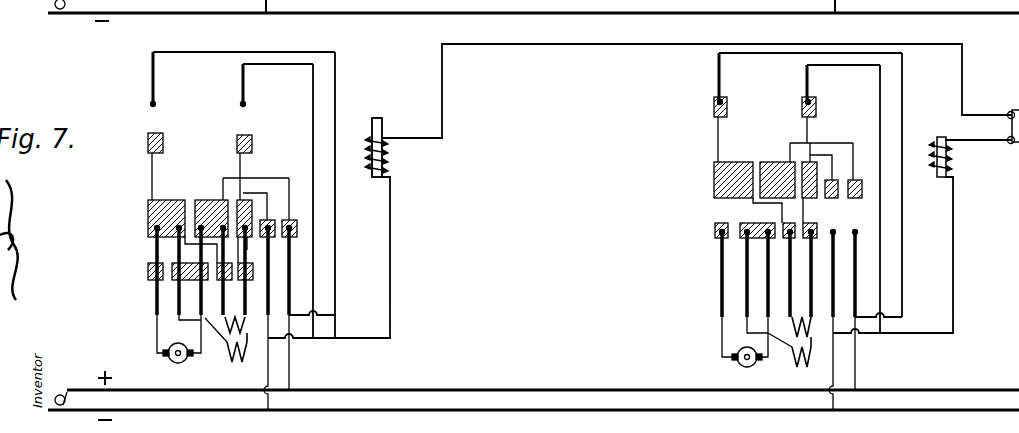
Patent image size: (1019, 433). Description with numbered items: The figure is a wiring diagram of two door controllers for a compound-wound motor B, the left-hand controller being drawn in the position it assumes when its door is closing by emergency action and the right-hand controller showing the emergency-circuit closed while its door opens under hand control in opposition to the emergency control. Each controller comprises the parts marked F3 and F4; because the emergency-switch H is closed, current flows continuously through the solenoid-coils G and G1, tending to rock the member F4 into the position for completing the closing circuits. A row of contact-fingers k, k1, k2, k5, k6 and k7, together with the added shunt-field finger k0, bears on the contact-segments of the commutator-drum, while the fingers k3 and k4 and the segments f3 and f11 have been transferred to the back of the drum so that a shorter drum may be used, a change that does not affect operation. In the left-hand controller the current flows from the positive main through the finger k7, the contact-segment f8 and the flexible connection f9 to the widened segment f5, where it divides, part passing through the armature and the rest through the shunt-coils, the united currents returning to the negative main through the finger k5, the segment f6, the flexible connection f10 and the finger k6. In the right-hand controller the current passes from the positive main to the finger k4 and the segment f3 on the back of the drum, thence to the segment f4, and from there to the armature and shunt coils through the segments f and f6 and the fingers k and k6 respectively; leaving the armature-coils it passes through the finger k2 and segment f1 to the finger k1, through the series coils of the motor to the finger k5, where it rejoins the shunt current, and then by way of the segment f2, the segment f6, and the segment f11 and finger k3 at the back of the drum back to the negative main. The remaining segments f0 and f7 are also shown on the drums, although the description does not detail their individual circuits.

The controller frame section F3 is at (493, 145).
The rocking member of the controller F4 is at (610, 195).
The contact-finger k is at (157, 308).
The contact-finger k1 is at (180, 303).
The contact-finger k2 is at (190, 254).
The contact-finger k3 is at (243, 84).
The contact-finger k4 is at (153, 80).
The contact-finger k5 is at (247, 250).
The contact-finger k6 is at (268, 258).
The contact-finger k7 is at (290, 278).
The contact-finger for shunt field-circuit k0 is at (249, 313).
The contact-segment f is at (148, 270).
The contact-segment f1 is at (742, 238).
The contact plate f0 is at (230, 275).
The contact-segment f2 is at (250, 272).
The contact-segment f3 is at (148, 146).
The contact-segment f4 is at (148, 203).
The contact-segment f5 is at (210, 200).
The contact-segment f6 is at (264, 219).
The contact plate f7 is at (289, 220).
The contact-segment f8 is at (296, 220).
The contact-segment and flexible connection f9 is at (252, 228).
The flexible connection f10 is at (245, 205).
The contact-segment f11 is at (237, 140).
The solenoid-coil G is at (383, 128).
The solenoid-coil G1 is at (395, 164).
The emergency-switch H is at (1001, 127).
The compound-wound motor B is at (466, 366).